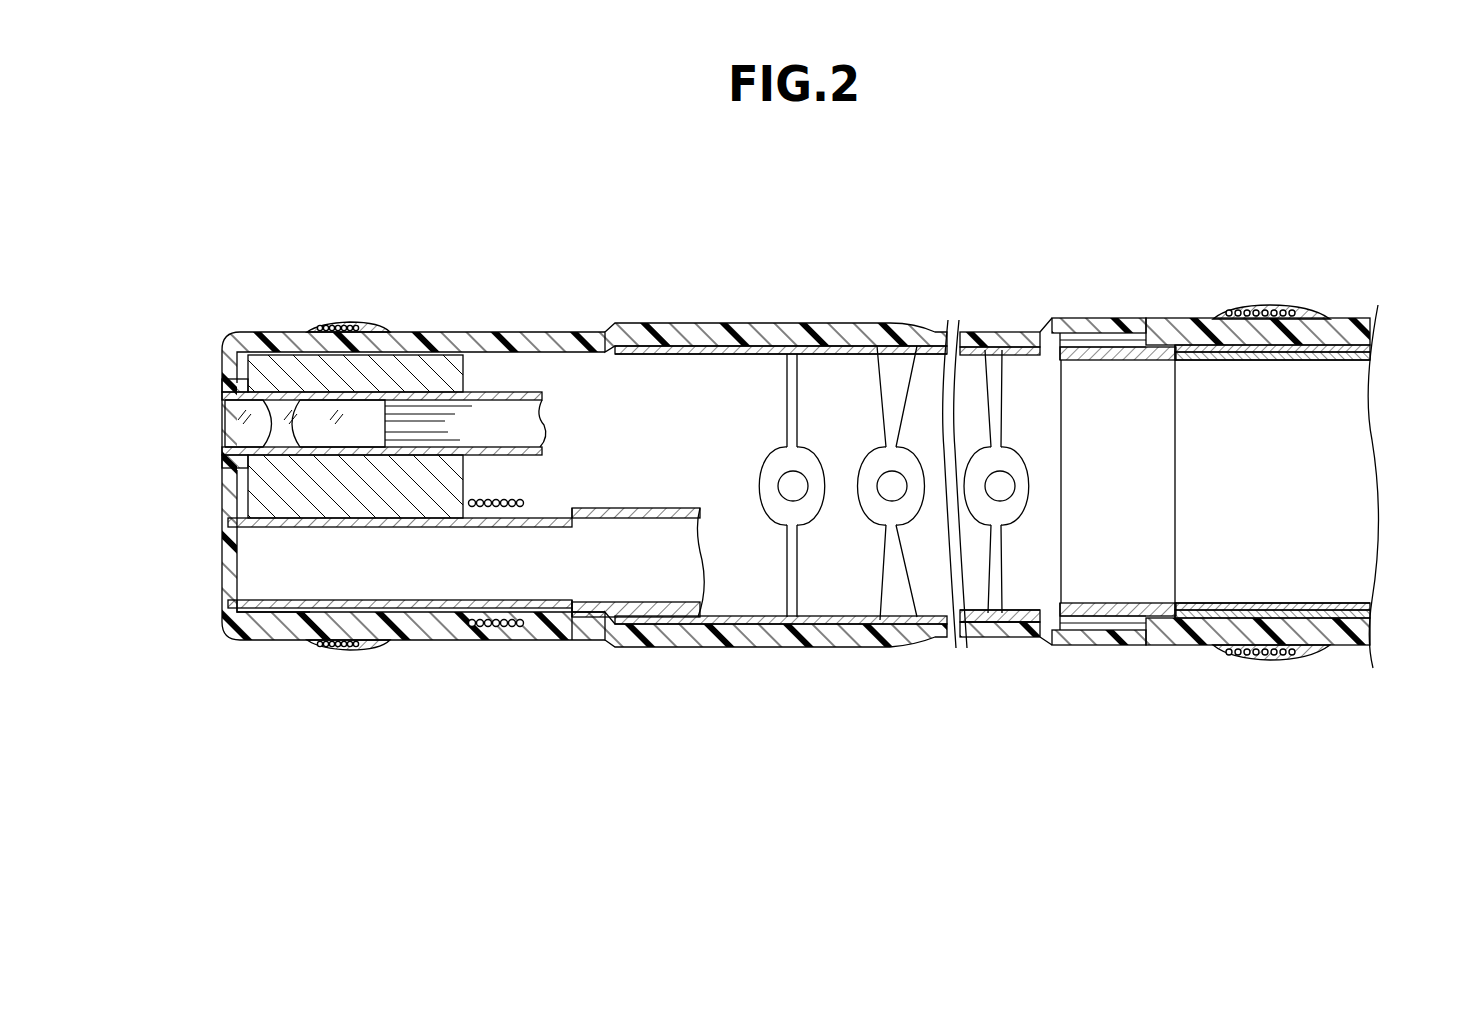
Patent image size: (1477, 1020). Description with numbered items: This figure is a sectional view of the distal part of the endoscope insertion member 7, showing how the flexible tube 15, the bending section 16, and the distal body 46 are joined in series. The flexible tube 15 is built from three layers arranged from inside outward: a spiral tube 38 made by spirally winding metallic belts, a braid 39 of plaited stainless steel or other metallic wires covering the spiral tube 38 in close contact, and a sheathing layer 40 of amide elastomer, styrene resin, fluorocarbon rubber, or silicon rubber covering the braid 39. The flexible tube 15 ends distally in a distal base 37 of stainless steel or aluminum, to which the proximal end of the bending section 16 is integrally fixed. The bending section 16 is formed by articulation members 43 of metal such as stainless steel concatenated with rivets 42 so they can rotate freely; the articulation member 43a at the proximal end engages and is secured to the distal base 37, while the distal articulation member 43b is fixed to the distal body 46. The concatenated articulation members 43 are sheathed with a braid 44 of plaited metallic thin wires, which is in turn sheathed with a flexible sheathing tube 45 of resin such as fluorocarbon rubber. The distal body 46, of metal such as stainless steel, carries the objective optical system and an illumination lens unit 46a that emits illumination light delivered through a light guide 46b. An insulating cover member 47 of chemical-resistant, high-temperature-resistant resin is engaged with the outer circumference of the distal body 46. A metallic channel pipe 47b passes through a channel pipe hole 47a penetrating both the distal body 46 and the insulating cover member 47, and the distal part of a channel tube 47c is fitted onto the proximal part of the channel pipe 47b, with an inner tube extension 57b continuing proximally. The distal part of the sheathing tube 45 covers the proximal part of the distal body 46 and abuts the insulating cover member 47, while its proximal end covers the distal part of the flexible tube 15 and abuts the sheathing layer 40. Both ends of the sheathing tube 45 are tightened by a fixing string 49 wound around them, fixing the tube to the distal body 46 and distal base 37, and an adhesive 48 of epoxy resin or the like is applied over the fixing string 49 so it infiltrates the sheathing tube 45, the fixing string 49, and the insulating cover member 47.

The insertion tube 7 is at (618, 310).
The flexible tube 15 is at (1313, 403).
The bending section 16 is at (893, 360).
The distal base 37 is at (1165, 630).
The spiral tube 38 is at (1367, 353).
The braid 39 is at (1353, 345).
The sheathing layer 40 is at (1355, 640).
The rivets 42 is at (897, 483).
The articulation members 43 is at (863, 340).
The articulation member located at the proximal end 43a is at (1030, 620).
The distal articulation member 43b is at (690, 346).
The braid 44 is at (830, 330).
The sheathing tube 45 is at (775, 330).
The distal body 46 is at (432, 352).
The illumination lens unit 46a is at (373, 425).
The light guide 46b is at (523, 410).
The insulating cover member 47 is at (275, 330).
The channel pipe hole 47a is at (272, 633).
The channel pipe 47b is at (305, 518).
The channel tube 47c is at (592, 632).
The adhesive 48 is at (338, 645).
The fixing string 49 is at (367, 648).
The inner tube extension 57b is at (450, 612).